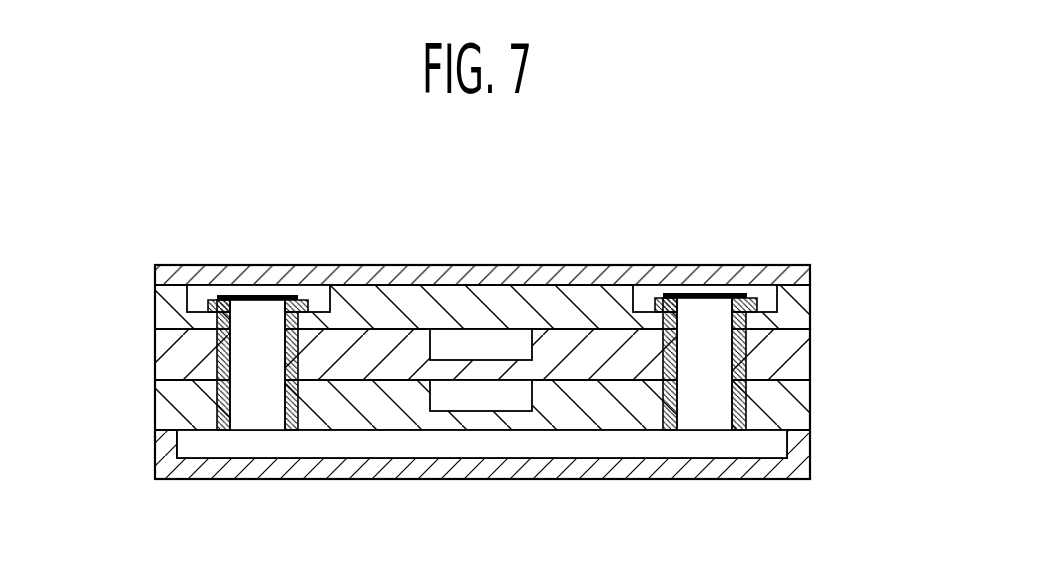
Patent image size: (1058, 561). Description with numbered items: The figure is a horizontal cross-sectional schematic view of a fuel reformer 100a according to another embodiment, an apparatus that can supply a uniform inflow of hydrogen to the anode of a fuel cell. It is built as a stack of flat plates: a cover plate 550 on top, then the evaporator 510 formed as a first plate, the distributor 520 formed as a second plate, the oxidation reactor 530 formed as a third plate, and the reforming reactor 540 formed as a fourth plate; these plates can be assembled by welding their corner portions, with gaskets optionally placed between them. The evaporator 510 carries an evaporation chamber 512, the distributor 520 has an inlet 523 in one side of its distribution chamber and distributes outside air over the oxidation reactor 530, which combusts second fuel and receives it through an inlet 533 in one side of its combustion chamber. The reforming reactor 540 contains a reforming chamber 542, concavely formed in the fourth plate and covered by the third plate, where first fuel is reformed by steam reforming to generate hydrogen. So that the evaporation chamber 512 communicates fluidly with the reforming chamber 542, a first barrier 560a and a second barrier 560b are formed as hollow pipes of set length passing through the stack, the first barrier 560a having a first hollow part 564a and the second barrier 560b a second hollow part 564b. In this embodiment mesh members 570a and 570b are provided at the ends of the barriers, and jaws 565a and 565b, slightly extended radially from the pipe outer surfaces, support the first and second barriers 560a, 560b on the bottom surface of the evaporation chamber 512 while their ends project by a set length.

The fuel reformer 100a is at (150, 202).
The evaporation chamber 512 is at (203, 287).
The mesh member 570b is at (273, 290).
The jaw 565b is at (302, 293).
The jaw 565a is at (657, 298).
The mesh member 570a is at (688, 292).
The cover plate 550 is at (797, 272).
The evaporator 510 is at (798, 302).
The distributor 520 is at (798, 358).
The oxidation reactor 530 is at (798, 403).
The reforming reactor 540 is at (798, 450).
The second barrier 560b is at (222, 422).
The second hollow part 564b is at (273, 418).
The inlet 523 is at (442, 345).
The inlet 533 is at (470, 402).
The reforming chamber 542 is at (632, 445).
The first hollow part 564a is at (698, 413).
The first barrier 560a is at (733, 415).